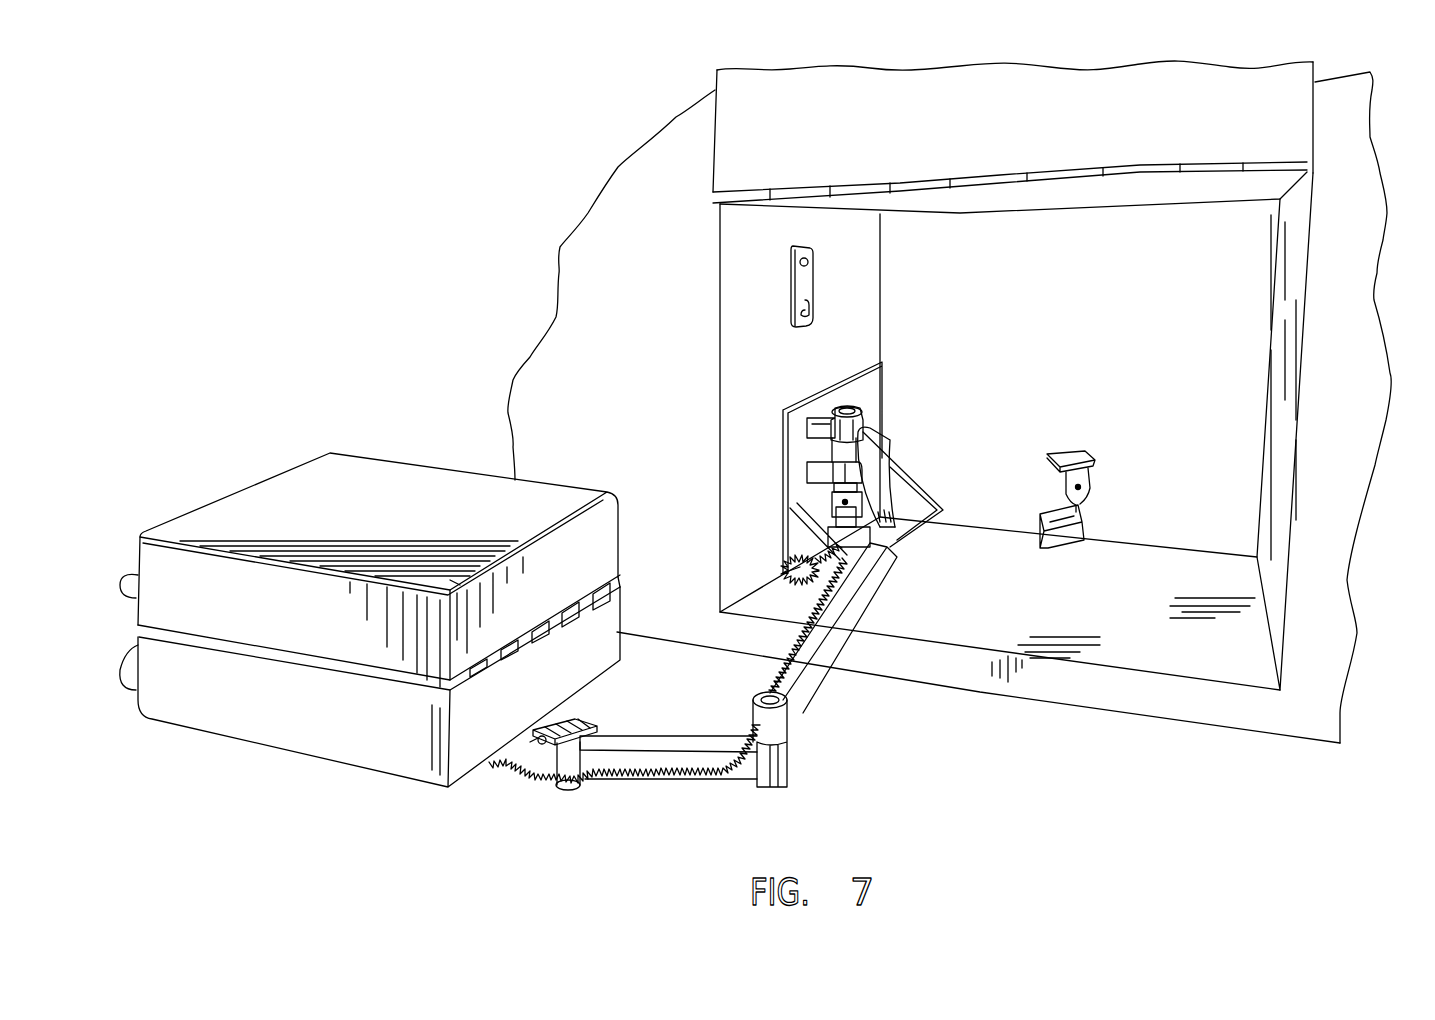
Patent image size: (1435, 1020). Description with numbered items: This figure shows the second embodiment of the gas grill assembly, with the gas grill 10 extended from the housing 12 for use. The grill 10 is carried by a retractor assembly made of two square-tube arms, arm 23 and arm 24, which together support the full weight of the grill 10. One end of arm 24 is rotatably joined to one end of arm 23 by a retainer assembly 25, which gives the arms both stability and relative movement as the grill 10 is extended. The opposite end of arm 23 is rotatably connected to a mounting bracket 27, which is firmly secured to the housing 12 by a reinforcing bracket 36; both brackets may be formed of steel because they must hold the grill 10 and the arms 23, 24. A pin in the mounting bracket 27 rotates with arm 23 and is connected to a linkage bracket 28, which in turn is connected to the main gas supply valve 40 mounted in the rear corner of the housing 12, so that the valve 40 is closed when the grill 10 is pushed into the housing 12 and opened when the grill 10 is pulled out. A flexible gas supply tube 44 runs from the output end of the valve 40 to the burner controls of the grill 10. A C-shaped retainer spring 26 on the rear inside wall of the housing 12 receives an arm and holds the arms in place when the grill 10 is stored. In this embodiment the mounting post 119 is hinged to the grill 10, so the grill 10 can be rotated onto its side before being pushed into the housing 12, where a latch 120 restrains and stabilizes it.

The gas grill 10 is at (308, 722).
The housing 12 is at (1130, 631).
The arm 23 is at (868, 594).
The arm 24 is at (740, 768).
The retainer assembly 25 is at (787, 732).
The retractor assembly retainer spring 26 is at (1078, 537).
The mounting bracket 27 is at (820, 473).
The linkage bracket 28 is at (847, 498).
The reinforcing bracket 36 is at (815, 428).
The main gas supply valve 40 is at (888, 540).
The flexible gas supply tube 44 is at (783, 568).
The mounting post 119 is at (577, 723).
The latch 120 is at (792, 288).